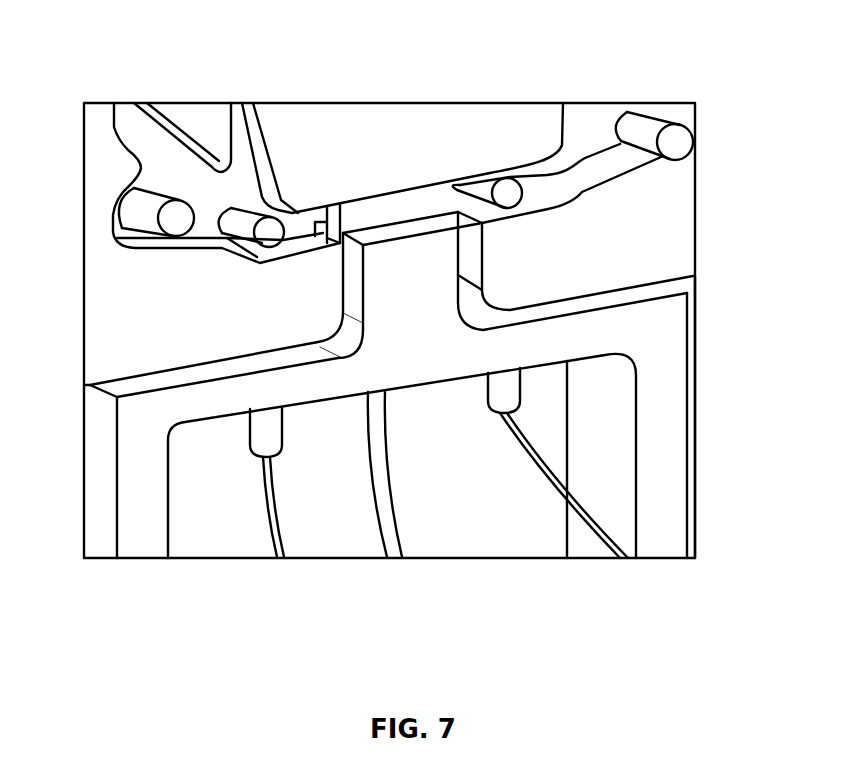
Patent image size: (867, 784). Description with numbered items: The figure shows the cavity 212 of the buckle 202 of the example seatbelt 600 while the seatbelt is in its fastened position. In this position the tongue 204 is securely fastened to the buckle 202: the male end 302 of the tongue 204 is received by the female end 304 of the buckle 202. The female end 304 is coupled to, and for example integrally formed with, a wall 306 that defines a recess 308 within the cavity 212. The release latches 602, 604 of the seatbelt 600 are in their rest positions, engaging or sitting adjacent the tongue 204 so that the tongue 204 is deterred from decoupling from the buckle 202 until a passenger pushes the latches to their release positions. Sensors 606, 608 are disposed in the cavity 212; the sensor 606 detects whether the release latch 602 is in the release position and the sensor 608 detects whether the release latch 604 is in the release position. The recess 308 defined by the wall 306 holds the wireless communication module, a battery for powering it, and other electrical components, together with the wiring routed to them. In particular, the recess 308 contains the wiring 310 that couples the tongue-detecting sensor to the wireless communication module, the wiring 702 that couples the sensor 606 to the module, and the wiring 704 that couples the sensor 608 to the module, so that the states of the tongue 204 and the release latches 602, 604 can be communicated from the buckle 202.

The seatbelt 600 is at (205, 52).
The cavity 212 is at (152, 83).
The tongue 204 is at (478, 120).
The male end 302 is at (393, 210).
The female end 304 is at (418, 284).
The release latch 604 is at (667, 220).
The release latch 602 is at (117, 316).
The wall 306 is at (230, 394).
The sensor 606 is at (258, 432).
The wiring 702 is at (270, 520).
The sensor 608 is at (513, 383).
The wiring 704 is at (523, 460).
The wiring 310 is at (373, 447).
The recess 308 is at (338, 530).
The buckle 202 is at (668, 487).